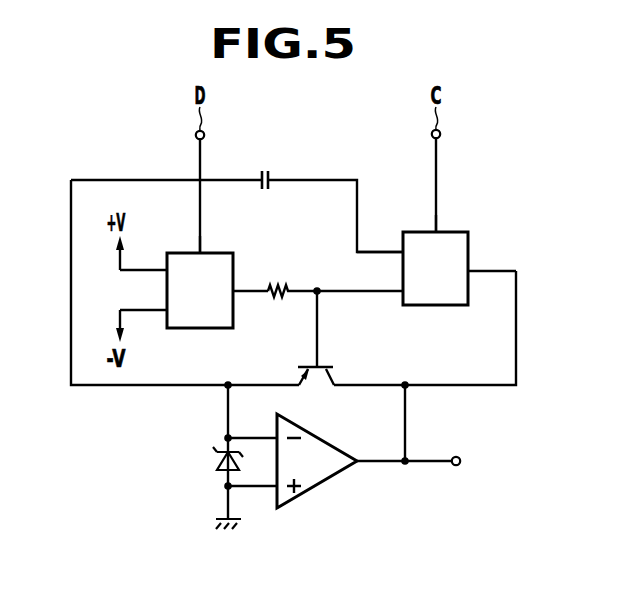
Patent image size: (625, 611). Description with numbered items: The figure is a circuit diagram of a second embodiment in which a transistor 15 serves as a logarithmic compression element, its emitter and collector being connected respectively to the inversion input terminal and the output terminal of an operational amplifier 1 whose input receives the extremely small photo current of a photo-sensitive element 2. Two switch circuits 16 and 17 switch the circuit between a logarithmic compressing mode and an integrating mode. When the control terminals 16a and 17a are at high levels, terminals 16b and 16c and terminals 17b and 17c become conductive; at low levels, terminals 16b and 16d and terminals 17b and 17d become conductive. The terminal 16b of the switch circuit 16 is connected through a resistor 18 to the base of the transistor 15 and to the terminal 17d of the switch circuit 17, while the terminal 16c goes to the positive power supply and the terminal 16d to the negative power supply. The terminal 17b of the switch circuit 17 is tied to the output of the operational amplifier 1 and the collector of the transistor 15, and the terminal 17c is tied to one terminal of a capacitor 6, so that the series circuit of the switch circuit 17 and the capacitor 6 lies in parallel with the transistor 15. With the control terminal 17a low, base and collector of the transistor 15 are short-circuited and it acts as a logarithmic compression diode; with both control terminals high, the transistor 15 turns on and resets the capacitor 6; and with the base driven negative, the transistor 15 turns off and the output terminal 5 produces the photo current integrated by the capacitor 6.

The operational amplifier 1 is at (328, 438).
The photo-sensitive element 2 is at (240, 461).
The output terminal 5 is at (456, 457).
The capacitor 6 is at (263, 171).
The transistor 15 is at (322, 367).
The switch circuit 16 is at (217, 253).
The control terminal 16a is at (185, 240).
The terminal 16b is at (250, 276).
The terminal 16c is at (143, 257).
The terminal 16d is at (143, 326).
The switch circuit 17 is at (452, 232).
The control terminal 17a is at (422, 218).
The terminal 17b is at (492, 257).
The terminal 17c is at (380, 238).
The terminal 17d is at (360, 278).
The resistor 18 is at (282, 285).